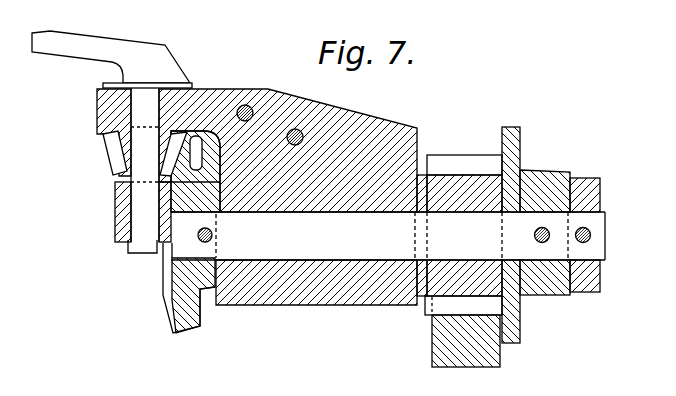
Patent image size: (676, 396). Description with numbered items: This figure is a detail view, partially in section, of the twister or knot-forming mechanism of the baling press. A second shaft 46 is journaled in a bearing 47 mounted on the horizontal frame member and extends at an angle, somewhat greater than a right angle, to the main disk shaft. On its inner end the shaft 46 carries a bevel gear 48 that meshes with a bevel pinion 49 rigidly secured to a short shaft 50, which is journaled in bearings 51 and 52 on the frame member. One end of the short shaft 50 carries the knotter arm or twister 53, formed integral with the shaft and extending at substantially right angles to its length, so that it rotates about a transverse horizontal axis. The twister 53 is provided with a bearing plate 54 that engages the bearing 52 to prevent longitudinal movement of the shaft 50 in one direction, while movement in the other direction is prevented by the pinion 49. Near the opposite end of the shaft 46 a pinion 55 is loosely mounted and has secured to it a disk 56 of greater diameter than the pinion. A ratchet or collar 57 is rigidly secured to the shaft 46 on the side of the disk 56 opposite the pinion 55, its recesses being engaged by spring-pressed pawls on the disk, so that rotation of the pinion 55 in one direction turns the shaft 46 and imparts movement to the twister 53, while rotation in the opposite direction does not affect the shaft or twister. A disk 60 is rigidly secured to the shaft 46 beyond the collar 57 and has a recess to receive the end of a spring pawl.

The second shaft 46 is at (367, 240).
The bearing 47 is at (283, 292).
The bevel gear 48 is at (180, 320).
The bevel pinion 49 is at (110, 149).
The short shaft 50 is at (140, 250).
The bearing 51 is at (115, 197).
The bearing 52 is at (97, 96).
The knotter arm or twister 53 is at (98, 50).
The bearing plate 54 is at (142, 86).
The pinion 55 is at (455, 182).
The disk 56 is at (520, 134).
The ratchet or collar 57 is at (548, 284).
The disk 60 is at (580, 176).